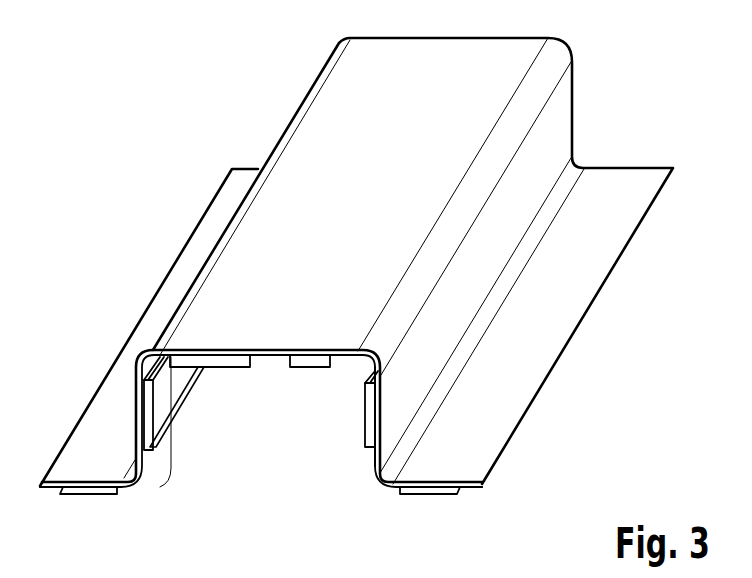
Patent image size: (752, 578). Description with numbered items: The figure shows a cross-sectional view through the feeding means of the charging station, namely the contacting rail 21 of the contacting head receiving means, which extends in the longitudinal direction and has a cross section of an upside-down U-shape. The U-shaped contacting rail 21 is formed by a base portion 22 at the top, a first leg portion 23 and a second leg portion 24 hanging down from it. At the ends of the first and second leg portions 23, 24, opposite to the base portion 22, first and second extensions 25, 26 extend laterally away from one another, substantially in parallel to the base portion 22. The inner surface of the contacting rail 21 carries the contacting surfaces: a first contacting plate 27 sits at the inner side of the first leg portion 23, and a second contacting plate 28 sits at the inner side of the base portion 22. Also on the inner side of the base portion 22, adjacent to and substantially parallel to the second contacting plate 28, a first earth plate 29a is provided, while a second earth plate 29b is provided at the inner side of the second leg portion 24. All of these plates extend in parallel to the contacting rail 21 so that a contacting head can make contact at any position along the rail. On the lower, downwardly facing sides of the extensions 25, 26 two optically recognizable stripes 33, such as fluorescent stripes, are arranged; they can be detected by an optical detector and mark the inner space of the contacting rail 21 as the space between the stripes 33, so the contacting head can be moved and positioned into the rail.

The contacting rail 21 is at (120, 231).
The base portion 22 is at (380, 489).
The first leg portion 23 is at (173, 418).
The second leg portion 24 is at (358, 354).
The first extension 25 is at (138, 489).
The second extension 26 is at (483, 489).
The first contacting plate 27 is at (145, 404).
The second contacting plate 28 is at (217, 362).
The first earth plate 29a is at (310, 362).
The second earth plate 29b is at (370, 403).
The optically recognizable stripes 33 is at (88, 490).